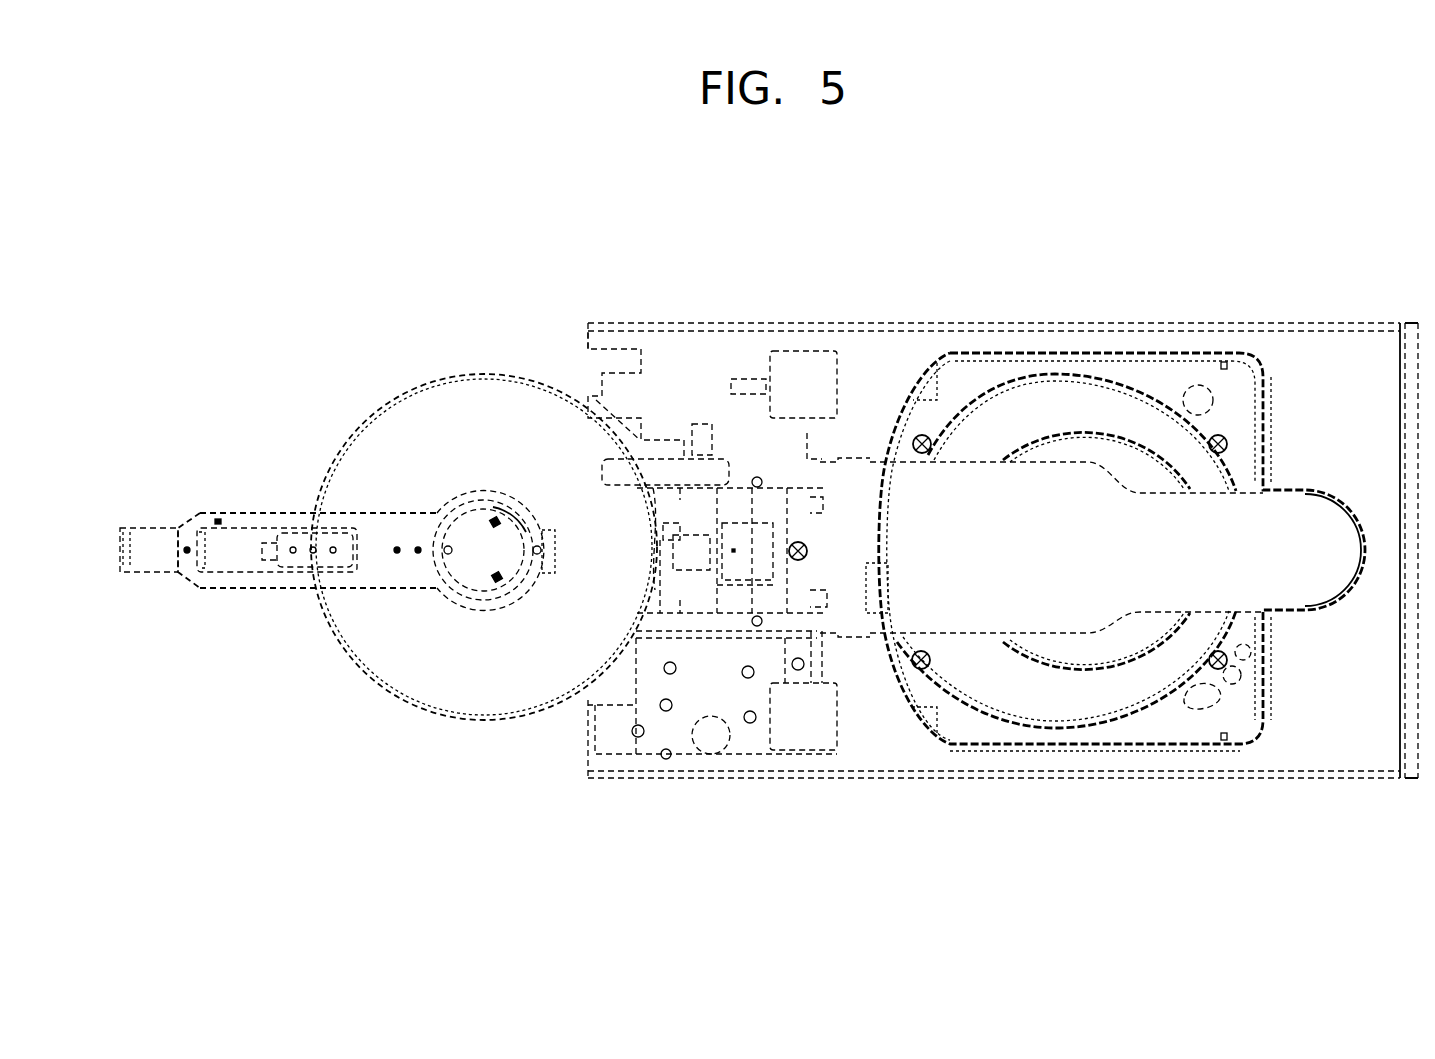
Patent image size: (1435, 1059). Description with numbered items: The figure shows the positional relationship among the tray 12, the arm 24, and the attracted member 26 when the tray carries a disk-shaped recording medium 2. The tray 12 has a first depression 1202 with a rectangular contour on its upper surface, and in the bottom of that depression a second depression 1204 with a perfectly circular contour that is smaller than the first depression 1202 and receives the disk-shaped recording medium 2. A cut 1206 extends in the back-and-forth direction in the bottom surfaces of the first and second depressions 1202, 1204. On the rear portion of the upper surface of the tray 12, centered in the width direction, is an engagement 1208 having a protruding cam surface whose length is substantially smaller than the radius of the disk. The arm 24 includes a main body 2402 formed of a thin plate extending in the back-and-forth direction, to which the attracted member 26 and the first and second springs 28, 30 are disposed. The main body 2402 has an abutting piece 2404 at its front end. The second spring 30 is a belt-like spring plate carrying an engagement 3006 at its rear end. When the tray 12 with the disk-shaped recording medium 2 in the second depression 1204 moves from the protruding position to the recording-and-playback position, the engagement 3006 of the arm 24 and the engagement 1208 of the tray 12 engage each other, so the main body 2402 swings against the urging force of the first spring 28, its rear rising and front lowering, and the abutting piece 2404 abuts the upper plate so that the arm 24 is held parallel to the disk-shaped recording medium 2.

The disk-shaped recording medium 2 is at (492, 372).
The tray 12 is at (1111, 322).
The arm 24 is at (262, 512).
The attracted member 26 is at (470, 567).
The first spring 28 is at (333, 566).
The second spring 30 is at (157, 574).
The main body 2402 is at (397, 512).
The abutting piece 2404 is at (557, 560).
The engagement 3006 is at (121, 558).
The first depression 1202 is at (1186, 362).
The second depression 1204 is at (1015, 392).
The cut 1206 is at (1031, 636).
The engagement 1208 is at (710, 558).